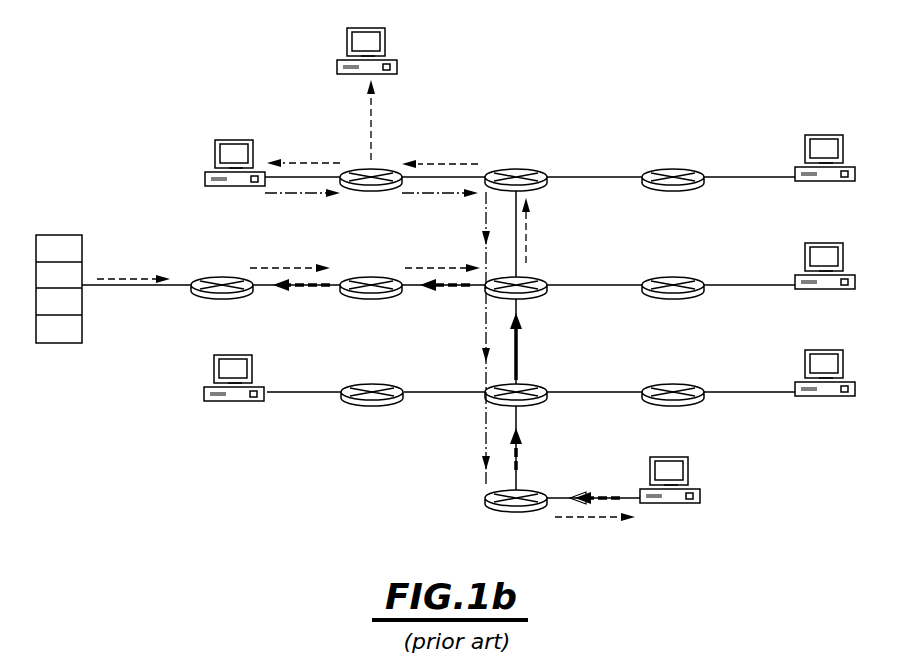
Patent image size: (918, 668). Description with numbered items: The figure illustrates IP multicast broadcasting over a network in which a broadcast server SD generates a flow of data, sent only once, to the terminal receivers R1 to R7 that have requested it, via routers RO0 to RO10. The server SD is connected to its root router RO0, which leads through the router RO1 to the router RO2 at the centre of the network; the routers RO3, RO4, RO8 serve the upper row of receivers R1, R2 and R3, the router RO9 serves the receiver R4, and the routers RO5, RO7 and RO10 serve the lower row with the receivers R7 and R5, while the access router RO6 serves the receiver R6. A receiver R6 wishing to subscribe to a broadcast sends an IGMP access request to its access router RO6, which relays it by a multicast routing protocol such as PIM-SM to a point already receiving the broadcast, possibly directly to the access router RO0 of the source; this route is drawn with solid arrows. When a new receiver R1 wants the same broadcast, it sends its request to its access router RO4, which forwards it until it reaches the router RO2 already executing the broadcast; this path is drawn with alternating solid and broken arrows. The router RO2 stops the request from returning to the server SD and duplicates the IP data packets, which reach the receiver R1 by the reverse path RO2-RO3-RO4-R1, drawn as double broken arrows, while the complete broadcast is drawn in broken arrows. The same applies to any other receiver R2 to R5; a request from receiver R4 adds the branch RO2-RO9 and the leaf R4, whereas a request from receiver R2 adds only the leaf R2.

The broadcast server SD is at (58, 230).
The receiver R1 is at (235, 147).
The receiver R2 is at (379, 48).
The receiver R3 is at (834, 158).
The receiver R4 is at (834, 266).
The receiver R5 is at (834, 373).
The receiver R6 is at (681, 480).
The receiver R7 is at (222, 378).
The access router of the broadcasting source RO0 is at (222, 272).
The router RO1 is at (371, 272).
The router RO2 is at (526, 270).
The router RO3 is at (516, 163).
The access router RO4 is at (382, 163).
The router RO5 is at (522, 411).
The access router RO6 is at (522, 520).
The router RO7 is at (372, 413).
The router RO8 is at (673, 162).
The router RO9 is at (673, 271).
The router RO10 is at (673, 377).